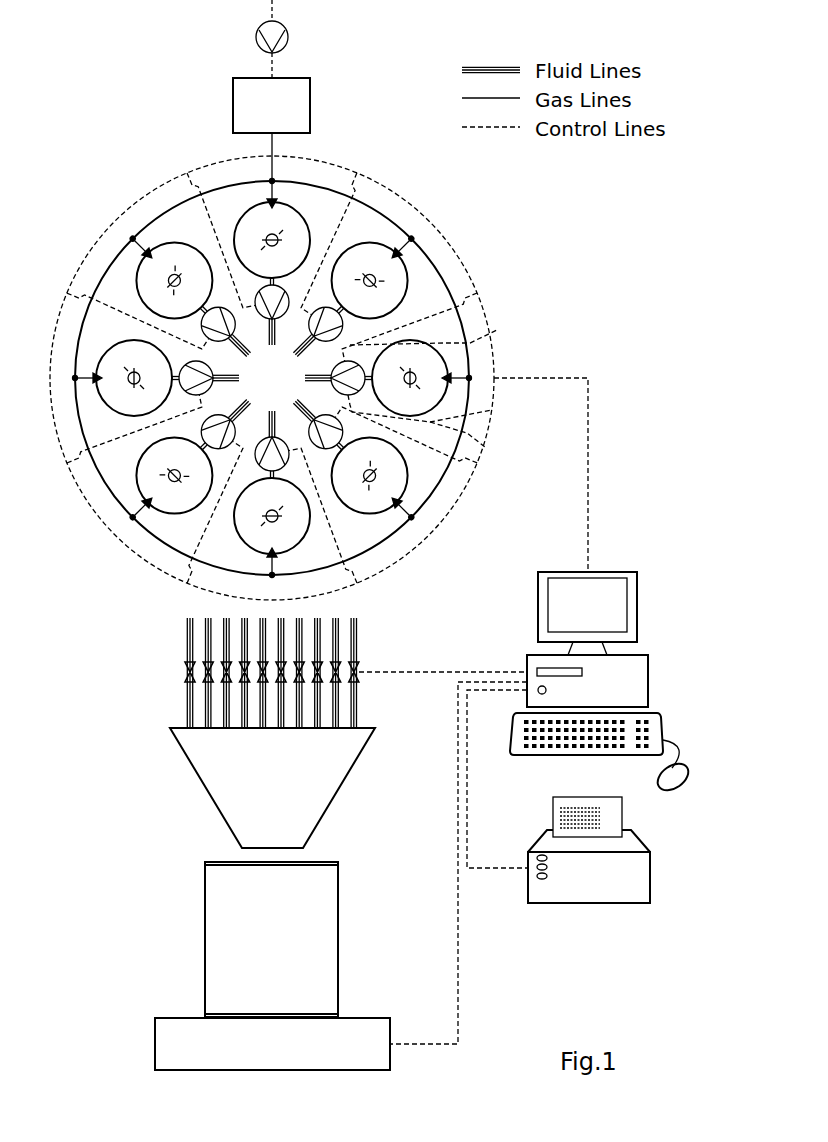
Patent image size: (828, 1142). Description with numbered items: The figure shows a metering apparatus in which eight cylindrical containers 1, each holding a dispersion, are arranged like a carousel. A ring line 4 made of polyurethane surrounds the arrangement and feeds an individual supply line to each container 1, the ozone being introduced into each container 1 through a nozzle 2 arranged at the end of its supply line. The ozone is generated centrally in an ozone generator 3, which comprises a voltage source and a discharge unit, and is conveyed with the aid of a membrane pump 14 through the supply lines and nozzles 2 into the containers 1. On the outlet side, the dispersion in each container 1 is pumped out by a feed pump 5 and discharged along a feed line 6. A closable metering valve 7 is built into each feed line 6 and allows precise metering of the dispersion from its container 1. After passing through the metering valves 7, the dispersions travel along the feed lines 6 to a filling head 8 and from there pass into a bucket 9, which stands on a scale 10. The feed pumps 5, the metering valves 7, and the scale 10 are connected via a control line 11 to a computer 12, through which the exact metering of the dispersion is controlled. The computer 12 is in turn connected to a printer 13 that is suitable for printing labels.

The container 1 is at (427, 357).
The nozzle 2 is at (492, 410).
The ozone generator 3 is at (279, 118).
The ring line 4 is at (432, 258).
The feed pump 5 is at (485, 447).
The feed line 6 is at (300, 383).
The metering valve 7 is at (184, 671).
The filling head 8 is at (279, 801).
The bucket 9 is at (279, 951).
The scale 10 is at (163, 1045).
The control line 11 is at (472, 278).
The computer 12 is at (640, 683).
The printer 13 is at (640, 875).
The membrane pump 14 is at (290, 30).